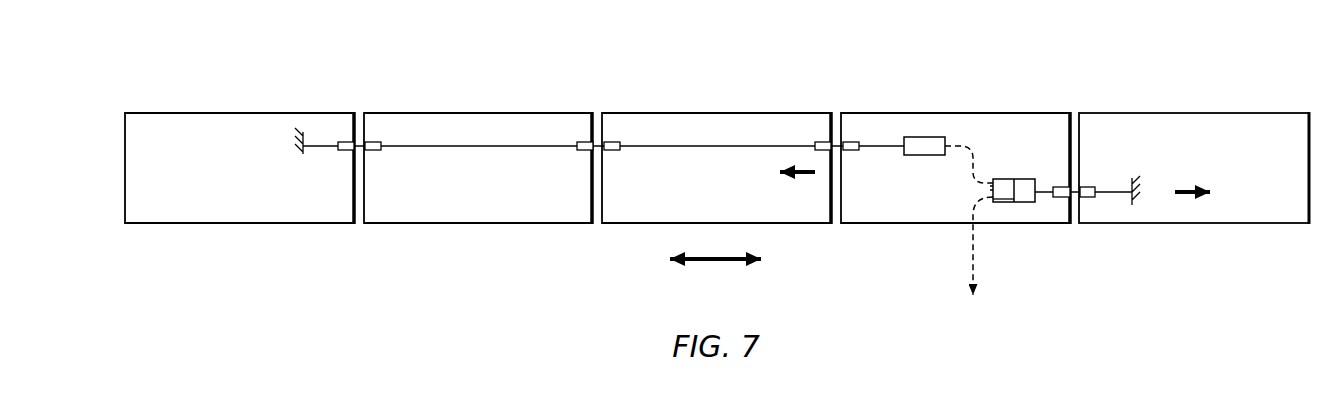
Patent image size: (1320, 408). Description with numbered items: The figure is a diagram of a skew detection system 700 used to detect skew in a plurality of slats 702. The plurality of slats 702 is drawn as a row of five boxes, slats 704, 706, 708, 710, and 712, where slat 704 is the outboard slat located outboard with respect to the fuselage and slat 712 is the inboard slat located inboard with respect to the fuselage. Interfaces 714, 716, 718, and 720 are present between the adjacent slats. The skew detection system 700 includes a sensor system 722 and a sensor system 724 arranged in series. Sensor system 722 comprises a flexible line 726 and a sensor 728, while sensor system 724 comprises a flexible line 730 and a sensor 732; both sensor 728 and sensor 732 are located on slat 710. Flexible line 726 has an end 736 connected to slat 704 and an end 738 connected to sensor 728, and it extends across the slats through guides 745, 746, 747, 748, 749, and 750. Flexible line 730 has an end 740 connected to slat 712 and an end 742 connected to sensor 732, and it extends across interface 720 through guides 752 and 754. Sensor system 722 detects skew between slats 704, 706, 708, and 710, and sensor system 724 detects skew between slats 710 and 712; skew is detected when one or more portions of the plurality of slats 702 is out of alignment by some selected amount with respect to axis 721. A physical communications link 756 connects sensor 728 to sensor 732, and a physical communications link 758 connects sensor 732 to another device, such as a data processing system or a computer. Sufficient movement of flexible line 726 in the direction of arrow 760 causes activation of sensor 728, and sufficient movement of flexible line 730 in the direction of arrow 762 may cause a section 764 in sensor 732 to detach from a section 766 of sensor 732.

The skew detection system 700 is at (510, 49).
The plurality of slats 702 is at (173, 101).
The slat 704 is at (238, 113).
The slat 706 is at (478, 113).
The slat 708 is at (717, 113).
The slat 710 is at (1045, 113).
The slat 712 is at (1195, 113).
The interface 714 is at (358, 231).
The interface 716 is at (598, 231).
The interface 718 is at (836, 229).
The interface 720 is at (1078, 229).
The axis 721 is at (716, 265).
The sensor system 722 is at (915, 161).
The sensor system 724 is at (1006, 165).
The flexible line 726 is at (681, 150).
The sensor 728 is at (924, 137).
The flexible line 730 is at (1118, 193).
The sensor 732 is at (1005, 203).
The end 736 is at (306, 160).
The end 738 is at (887, 146).
The end 740 is at (1135, 201).
The end 742 is at (1046, 197).
The guide 745 is at (346, 142).
The guide 746 is at (373, 142).
The guide 747 is at (582, 142).
The guide 748 is at (614, 142).
The guide 749 is at (820, 142).
The guide 750 is at (851, 142).
The guide 752 is at (1063, 198).
The guide 754 is at (1089, 187).
The physical communications link 756 is at (957, 146).
The physical communications link 758 is at (970, 265).
The arrow 760 is at (805, 178).
The arrow 762 is at (1193, 186).
The section 764 is at (990, 188).
The section 766 is at (1032, 179).